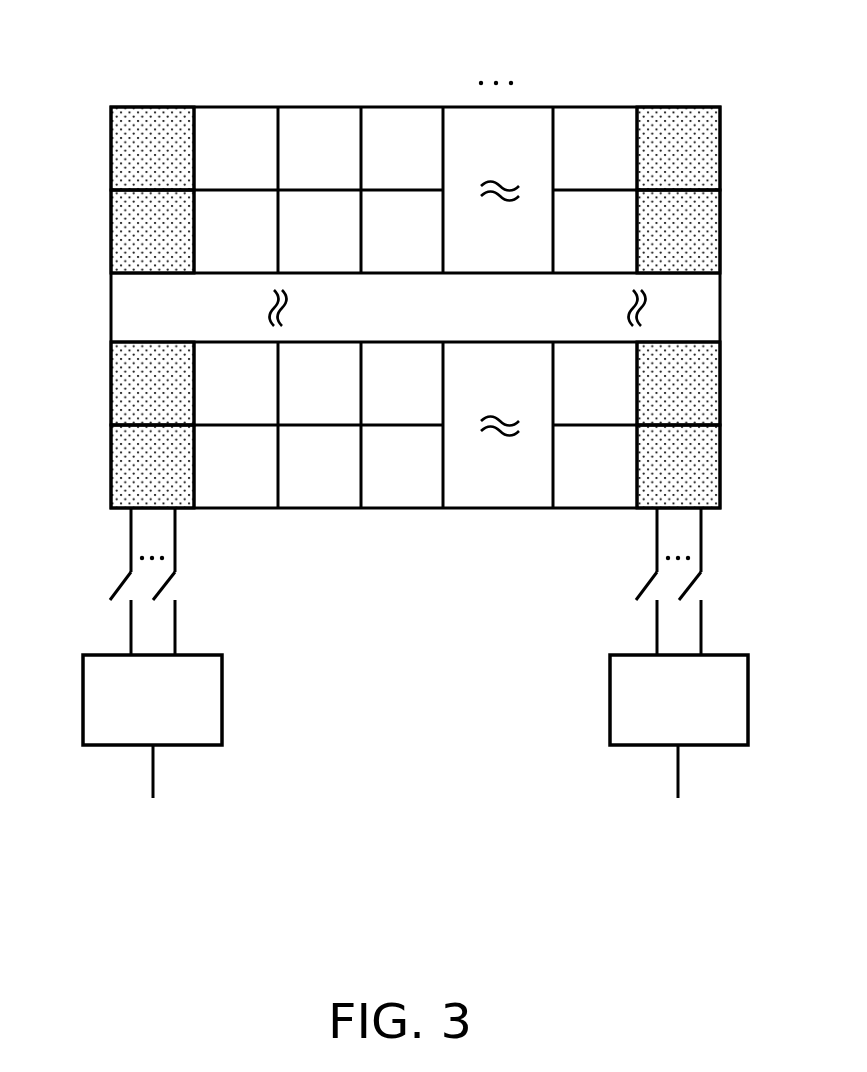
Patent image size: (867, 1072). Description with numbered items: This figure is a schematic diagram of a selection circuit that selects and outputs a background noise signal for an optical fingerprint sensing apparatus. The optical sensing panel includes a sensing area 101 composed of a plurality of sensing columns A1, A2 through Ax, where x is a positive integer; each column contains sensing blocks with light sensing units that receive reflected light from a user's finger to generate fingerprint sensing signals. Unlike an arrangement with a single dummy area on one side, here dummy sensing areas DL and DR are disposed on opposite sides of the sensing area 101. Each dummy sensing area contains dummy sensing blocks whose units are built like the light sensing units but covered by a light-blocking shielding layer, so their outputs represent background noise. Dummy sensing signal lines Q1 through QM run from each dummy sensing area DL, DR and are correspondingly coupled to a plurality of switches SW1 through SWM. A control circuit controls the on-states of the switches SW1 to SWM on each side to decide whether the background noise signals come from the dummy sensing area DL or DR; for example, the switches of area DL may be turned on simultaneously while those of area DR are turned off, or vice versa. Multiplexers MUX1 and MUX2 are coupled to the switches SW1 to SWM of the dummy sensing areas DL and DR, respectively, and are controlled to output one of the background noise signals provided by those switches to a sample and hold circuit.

The sensing area 101 is at (610, 60).
The dummy sensing area DL is at (152, 285).
The dummy sensing area DR is at (678, 285).
The sensing column A1 is at (236, 285).
The sensing column A2 is at (319, 285).
The sensing column Ax is at (595, 285).
The dummy sensing signal line Q1 is at (378, 540).
The dummy sensing signal line QM is at (419, 540).
The switch SW1 is at (355, 613).
The switch SWM is at (460, 613).
The multiplexer MUX1 is at (152, 726).
The multiplexer MUX2 is at (679, 726).